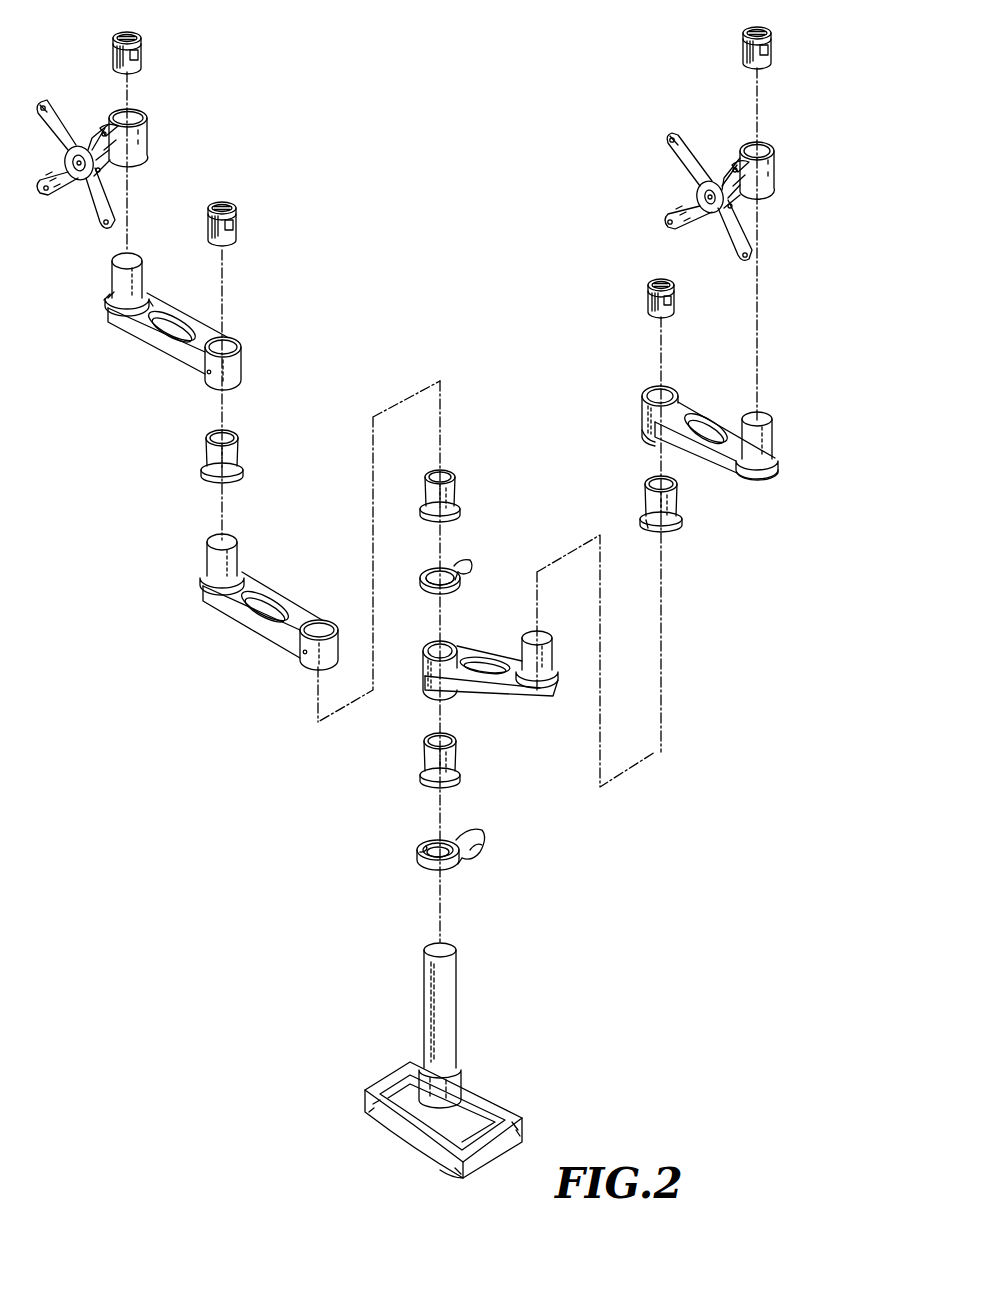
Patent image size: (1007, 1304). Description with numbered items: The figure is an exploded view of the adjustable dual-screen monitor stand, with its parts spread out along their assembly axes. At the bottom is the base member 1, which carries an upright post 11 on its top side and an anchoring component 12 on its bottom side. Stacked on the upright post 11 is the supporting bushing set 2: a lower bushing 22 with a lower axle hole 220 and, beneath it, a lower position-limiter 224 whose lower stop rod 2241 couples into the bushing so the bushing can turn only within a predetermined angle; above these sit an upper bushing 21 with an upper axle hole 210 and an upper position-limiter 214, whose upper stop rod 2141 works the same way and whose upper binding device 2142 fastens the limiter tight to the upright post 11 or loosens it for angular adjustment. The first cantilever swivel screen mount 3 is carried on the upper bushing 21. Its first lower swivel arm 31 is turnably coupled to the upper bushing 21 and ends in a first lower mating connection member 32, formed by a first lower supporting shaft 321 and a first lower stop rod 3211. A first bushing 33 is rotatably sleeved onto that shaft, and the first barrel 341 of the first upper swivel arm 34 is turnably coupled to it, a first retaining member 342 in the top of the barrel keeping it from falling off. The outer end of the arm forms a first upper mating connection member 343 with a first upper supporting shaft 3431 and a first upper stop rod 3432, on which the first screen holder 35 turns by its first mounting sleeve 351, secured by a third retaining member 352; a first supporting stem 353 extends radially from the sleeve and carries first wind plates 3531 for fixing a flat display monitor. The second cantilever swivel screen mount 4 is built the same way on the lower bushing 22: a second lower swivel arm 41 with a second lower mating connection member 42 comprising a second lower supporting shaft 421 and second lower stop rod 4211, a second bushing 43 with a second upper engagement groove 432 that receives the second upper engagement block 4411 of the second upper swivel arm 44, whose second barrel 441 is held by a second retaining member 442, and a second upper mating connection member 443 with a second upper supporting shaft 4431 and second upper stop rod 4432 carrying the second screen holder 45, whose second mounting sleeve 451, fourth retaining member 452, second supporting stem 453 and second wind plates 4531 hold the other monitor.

The base member 1 is at (468, 1094).
The upright post 11 is at (452, 1011).
The anchoring component 12 is at (463, 1173).
The supporting bushing set 2 is at (507, 462).
The upper bushing 21 is at (451, 471).
The upper axle hole 210 is at (428, 470).
The upper position-limiter 214 is at (448, 580).
The upper stop rod 2141 is at (453, 585).
The upper binding device 2142 is at (458, 570).
The lower bushing 22 is at (406, 767).
The lower axle hole 220 is at (428, 742).
The lower position-limiter 224 is at (399, 880).
The lower stop rod 2241 is at (420, 860).
The first cantilever swivel screen mount 3 is at (250, 600).
The first lower swivel arm 31 is at (335, 644).
The first lower mating connection member 32 is at (235, 557).
The first lower supporting shaft 321 is at (234, 559).
The first lower stop rod 3211 is at (241, 578).
The first bushing 33 is at (233, 460).
The first upper swivel arm 34 is at (175, 337).
The first barrel 341 is at (234, 367).
The first retaining member 342 is at (238, 223).
The first upper mating connection member 343 is at (100, 317).
The first upper supporting shaft 3431 is at (115, 278).
The first upper stop rod 3432 is at (141, 300).
The first screen holder 35 is at (153, 64).
The first mounting sleeve 351 is at (149, 132).
The third retaining member 352 is at (143, 55).
The first supporting stem 353 is at (113, 163).
The first wind plates 3531 is at (82, 118).
The second cantilever swivel screen mount 4 is at (500, 664).
The second lower swivel arm 41 is at (431, 649).
The second lower mating connection member 42 is at (554, 664).
The second lower supporting shaft 421 is at (550, 653).
The second lower stop rod 4211 is at (558, 661).
The second bushing 43 is at (661, 533).
The second upper engagement groove 432 is at (647, 518).
The second upper swivel arm 44 is at (688, 441).
The second barrel 441 is at (647, 417).
The second upper engagement block 4411 is at (644, 438).
The second retaining member 442 is at (648, 295).
The second upper mating connection member 443 is at (753, 441).
The second upper supporting shaft 4431 is at (753, 454).
The second upper stop rod 4432 is at (733, 422).
The second screen holder 45 is at (667, 81).
The second mounting sleeve 451 is at (777, 157).
The fourth retaining member 452 is at (742, 48).
The second supporting stem 453 is at (735, 210).
The second wind plates 4531 is at (670, 153).